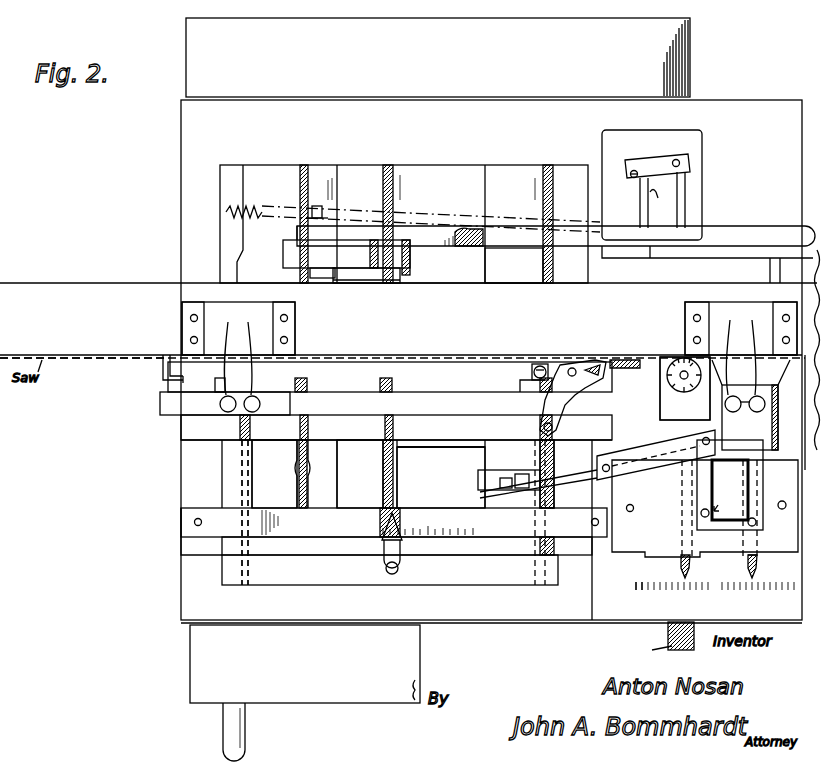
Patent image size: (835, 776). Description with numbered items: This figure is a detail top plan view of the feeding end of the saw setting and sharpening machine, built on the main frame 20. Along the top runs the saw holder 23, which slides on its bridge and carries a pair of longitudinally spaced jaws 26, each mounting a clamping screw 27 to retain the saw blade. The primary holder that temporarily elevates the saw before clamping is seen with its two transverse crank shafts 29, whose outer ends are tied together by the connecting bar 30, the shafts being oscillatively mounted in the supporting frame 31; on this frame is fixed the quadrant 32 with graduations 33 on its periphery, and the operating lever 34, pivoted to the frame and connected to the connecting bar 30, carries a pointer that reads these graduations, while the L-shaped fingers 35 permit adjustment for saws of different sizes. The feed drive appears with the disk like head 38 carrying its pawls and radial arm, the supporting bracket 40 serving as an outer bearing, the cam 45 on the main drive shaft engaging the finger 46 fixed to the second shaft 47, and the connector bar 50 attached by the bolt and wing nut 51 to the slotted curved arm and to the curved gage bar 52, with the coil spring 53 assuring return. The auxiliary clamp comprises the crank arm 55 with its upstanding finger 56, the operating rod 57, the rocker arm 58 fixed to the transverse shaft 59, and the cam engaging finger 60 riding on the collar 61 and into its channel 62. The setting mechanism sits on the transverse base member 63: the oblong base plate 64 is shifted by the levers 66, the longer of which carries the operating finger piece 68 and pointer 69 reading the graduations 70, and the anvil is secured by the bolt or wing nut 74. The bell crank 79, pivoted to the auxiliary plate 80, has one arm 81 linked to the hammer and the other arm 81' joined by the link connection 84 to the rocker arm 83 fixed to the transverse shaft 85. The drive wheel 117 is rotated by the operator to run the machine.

The main frame 20 is at (218, 322).
The saw holder 23 is at (160, 360).
The jaws 26 is at (390, 377).
The clamping screw 27 is at (219, 405).
The crank shafts 29 is at (240, 488).
The connecting bar 30 is at (407, 561).
The supporting frame 31 is at (213, 530).
The quadrant 32 is at (394, 522).
The graduations 33 is at (425, 510).
The operating lever 34 is at (383, 548).
The L-shaped fingers 35 is at (183, 384).
The disk like head 38 is at (792, 268).
The supporting bracket 40 is at (770, 226).
The cam 45 is at (428, 448).
The finger 46 is at (346, 259).
The second shaft 47 is at (360, 474).
The connector bar 50 is at (460, 247).
The bolt and wing nut 51 is at (322, 212).
The curved gage bar 52 is at (372, 283).
The coil spring 53 is at (226, 212).
The crank arm 55 is at (606, 392).
The upstanding finger 56 is at (632, 360).
The operating rod 57 is at (462, 448).
The rocker arm 58 is at (396, 427).
The transverse shaft 59 is at (274, 474).
The cam engaging finger 60 is at (636, 138).
The collar 61 is at (657, 160).
The channel 62 is at (686, 200).
The transverse base member 63 is at (621, 593).
The base plate 64 is at (662, 418).
The levers 66 is at (676, 450).
The operating finger piece 68 is at (680, 576).
The pointer 69 is at (746, 576).
The graduations 70 is at (735, 602).
The bolt or wing nut 74 is at (666, 358).
The bell crank 79 is at (660, 206).
The auxiliary plate 80 is at (705, 510).
The arm 81 is at (730, 496).
The other arm 81' is at (626, 203).
The rocker arm 83 is at (510, 472).
The link connection 84 is at (585, 476).
The transverse shaft 85 is at (514, 265).
The drive wheel 117 is at (305, 693).